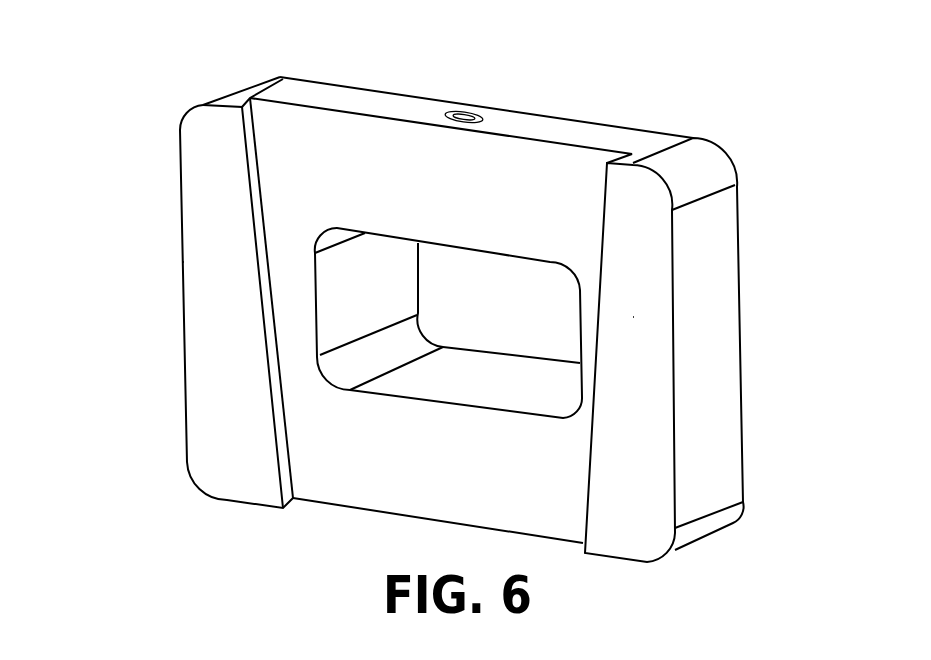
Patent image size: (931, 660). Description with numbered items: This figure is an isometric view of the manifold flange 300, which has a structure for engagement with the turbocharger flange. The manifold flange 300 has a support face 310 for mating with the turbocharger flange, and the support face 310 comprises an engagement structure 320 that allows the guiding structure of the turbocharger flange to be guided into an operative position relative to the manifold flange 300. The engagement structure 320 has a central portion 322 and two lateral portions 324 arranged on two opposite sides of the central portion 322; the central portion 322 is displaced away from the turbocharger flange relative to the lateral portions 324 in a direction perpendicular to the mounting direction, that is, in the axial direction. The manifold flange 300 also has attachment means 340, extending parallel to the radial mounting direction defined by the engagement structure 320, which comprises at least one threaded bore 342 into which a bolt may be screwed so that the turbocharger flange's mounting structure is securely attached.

The manifold flange 300 is at (436, 298).
The support face 310 is at (372, 460).
The engagement structure 320 is at (300, 337).
The central portion 322 is at (513, 498).
The lateral portions 324 is at (223, 263).
The attachment means 340 is at (470, 112).
The threaded bore 342 is at (448, 115).